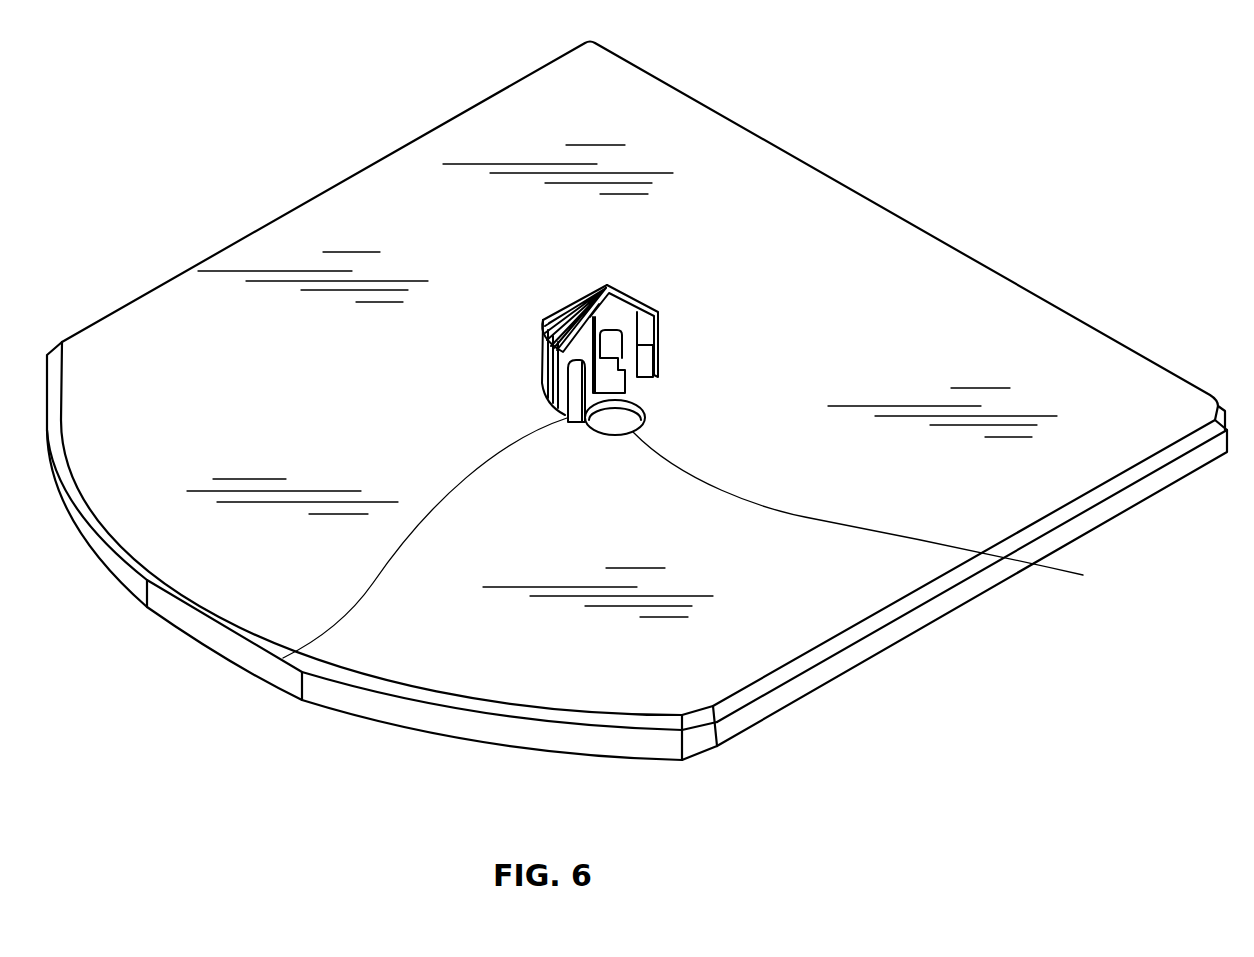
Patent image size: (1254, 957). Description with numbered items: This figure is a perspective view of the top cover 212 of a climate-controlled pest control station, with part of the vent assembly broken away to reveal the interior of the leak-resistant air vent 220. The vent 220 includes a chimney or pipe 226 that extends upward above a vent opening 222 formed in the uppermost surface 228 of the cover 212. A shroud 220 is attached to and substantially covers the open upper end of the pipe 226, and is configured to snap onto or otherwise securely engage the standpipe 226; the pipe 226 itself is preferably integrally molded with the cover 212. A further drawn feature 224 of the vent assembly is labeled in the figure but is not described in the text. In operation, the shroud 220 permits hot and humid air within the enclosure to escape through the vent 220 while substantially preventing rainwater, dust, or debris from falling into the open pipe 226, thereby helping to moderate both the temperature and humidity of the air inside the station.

The cover 212 is at (905, 220).
The air vent 220 is at (552, 313).
The vent opening 222 is at (879, 518).
The clip tab 224 is at (659, 303).
The chimney or pipe 226 is at (330, 625).
The uppermost surface 228 is at (1022, 380).